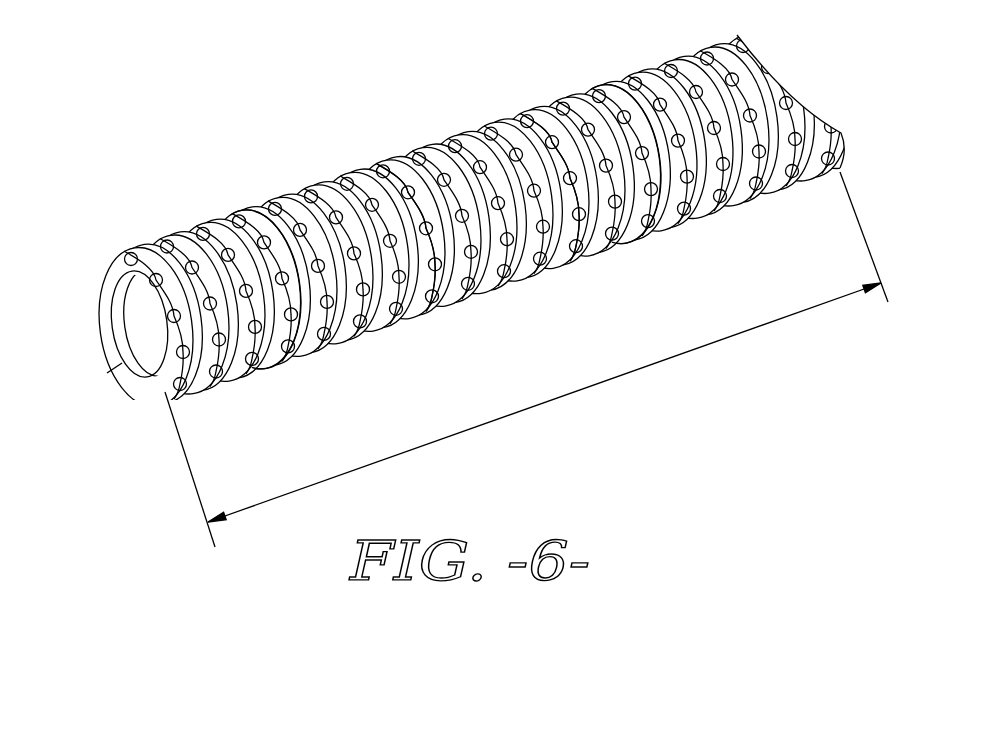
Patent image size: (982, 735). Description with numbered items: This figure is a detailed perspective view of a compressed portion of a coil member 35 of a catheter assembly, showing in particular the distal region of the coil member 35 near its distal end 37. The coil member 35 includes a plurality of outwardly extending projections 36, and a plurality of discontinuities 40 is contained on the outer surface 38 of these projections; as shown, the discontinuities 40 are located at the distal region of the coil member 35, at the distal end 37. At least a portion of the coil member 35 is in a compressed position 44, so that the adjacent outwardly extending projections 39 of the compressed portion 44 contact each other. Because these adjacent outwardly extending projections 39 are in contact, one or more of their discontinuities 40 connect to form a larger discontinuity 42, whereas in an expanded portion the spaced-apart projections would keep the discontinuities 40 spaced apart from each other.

The coil member 35 is at (464, 220).
The outwardly extending projections 36 is at (283, 357).
The distal end 37 is at (108, 368).
The outer surface 38 is at (616, 103).
The adjacent outwardly extending projections 39 is at (383, 160).
The discontinuities 40 is at (263, 217).
The larger discontinuity 42 is at (428, 190).
The compressed position 44 is at (507, 416).